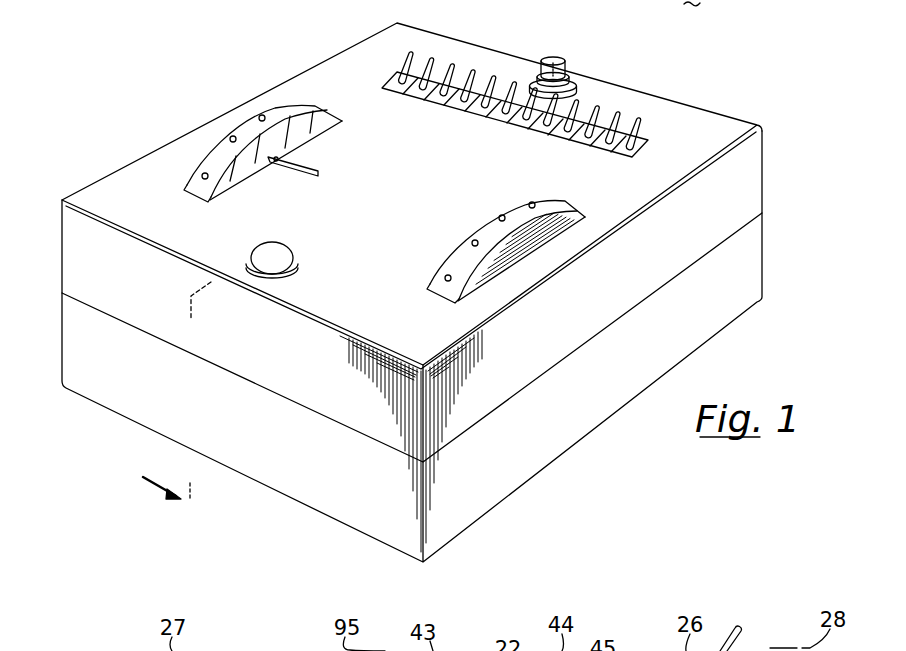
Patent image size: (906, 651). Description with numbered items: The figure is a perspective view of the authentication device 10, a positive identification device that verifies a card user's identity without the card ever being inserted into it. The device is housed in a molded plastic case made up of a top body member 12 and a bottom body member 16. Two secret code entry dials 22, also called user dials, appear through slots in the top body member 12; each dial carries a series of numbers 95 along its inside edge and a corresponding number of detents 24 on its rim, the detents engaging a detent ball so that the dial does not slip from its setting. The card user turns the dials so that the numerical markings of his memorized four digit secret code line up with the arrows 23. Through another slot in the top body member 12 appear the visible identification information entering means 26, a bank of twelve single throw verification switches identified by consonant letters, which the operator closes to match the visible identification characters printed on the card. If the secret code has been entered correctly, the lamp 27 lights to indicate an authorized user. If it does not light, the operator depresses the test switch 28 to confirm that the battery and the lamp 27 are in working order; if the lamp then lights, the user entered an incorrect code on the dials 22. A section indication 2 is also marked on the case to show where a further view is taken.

The test instrument 10 is at (298, 60).
The cover 12 is at (749, 190).
The base housing 16 is at (752, 272).
The scale plate 22 is at (243, 126).
The pointer 23 is at (319, 173).
The mounting holes 24 is at (229, 141).
The pin selector block 26 is at (645, 138).
The verification button 27 is at (292, 253).
The test knob 28 is at (555, 58).
The pivot 95 is at (283, 160).
The section line 2 is at (178, 404).